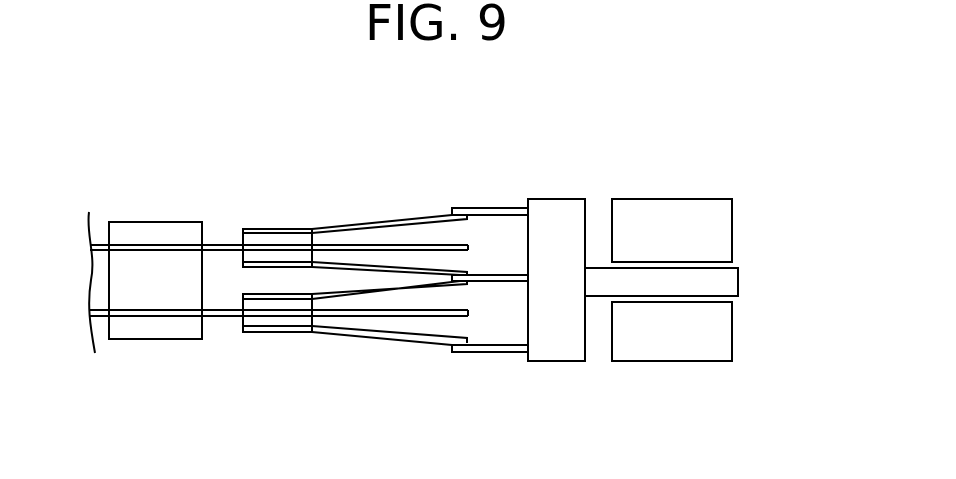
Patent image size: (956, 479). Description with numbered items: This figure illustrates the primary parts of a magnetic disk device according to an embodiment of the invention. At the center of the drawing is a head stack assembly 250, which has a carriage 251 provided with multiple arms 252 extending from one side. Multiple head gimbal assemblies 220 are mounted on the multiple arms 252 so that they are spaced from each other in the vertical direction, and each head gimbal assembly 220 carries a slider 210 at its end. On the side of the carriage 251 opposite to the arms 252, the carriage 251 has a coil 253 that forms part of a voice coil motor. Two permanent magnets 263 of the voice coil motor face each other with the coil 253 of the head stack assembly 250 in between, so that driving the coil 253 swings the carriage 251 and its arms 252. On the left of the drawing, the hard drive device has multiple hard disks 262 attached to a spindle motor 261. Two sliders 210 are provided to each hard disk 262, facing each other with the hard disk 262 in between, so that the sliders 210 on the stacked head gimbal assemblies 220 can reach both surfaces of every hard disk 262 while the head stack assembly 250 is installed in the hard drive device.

The slider 210 is at (240, 232).
The head gimbal assembly 220 is at (372, 222).
The head stack assembly 250 is at (557, 192).
The carriage 251 is at (537, 199).
The arm 252 is at (465, 208).
The coil 253 is at (730, 275).
The spindle motor 261 is at (133, 229).
The hard disk 262 is at (215, 240).
The permanent magnet 263 is at (660, 200).